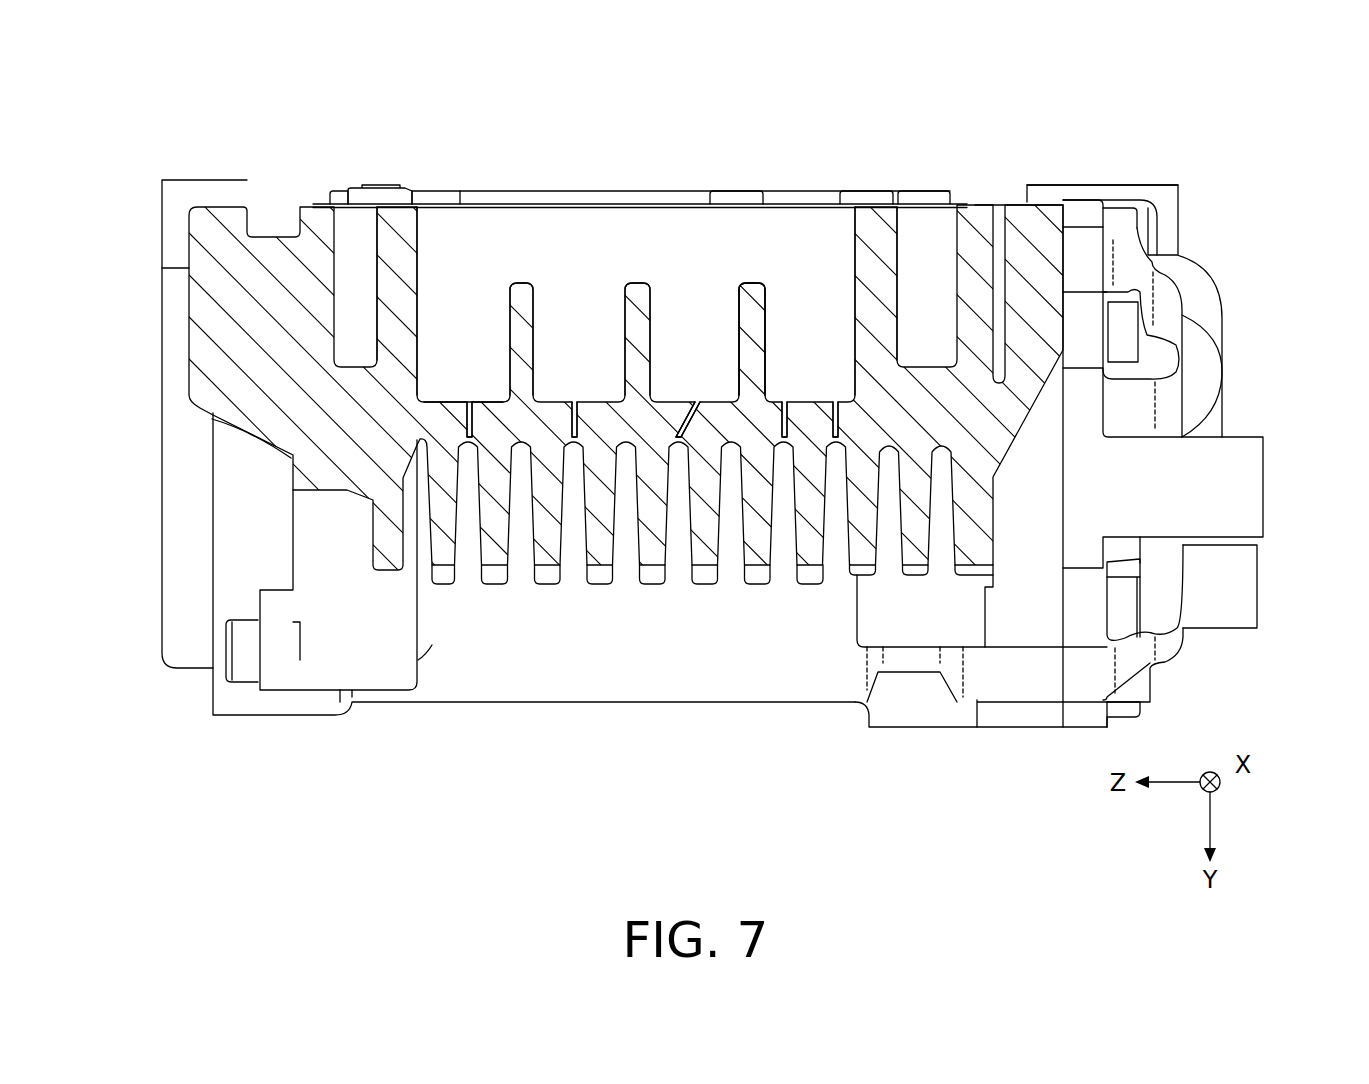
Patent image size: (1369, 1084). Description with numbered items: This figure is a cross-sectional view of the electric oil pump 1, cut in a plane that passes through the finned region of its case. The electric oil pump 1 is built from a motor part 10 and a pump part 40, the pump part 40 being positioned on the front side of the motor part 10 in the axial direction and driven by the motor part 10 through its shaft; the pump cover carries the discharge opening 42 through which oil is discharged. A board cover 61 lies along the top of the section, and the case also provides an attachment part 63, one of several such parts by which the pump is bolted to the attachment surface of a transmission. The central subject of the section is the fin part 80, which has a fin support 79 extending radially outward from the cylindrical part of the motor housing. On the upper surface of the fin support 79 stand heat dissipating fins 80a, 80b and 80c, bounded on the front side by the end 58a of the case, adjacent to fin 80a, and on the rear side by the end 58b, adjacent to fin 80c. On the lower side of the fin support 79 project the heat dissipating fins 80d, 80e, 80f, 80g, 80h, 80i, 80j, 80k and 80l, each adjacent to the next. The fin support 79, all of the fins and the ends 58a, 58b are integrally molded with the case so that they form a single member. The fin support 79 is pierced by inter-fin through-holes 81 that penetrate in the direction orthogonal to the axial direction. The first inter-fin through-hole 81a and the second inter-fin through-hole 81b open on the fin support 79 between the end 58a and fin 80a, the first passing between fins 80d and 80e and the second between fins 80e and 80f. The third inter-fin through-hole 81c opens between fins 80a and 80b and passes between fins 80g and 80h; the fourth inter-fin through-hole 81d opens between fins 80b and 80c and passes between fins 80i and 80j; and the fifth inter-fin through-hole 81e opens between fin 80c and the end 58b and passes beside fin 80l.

The electric oil pump 1 is at (1199, 162).
The motor part 10 is at (152, 602).
The pump part 40 is at (1232, 410).
The discharge opening 42 is at (1262, 562).
The end 58a is at (880, 247).
The end 58b is at (395, 237).
The board cover 61 is at (669, 203).
The attachment part 63 is at (1170, 212).
The fin support 79 is at (497, 410).
The fin part 80 is at (757, 327).
The heat dissipating fin 80a is at (750, 292).
The heat dissipating fin 80b is at (637, 292).
The heat dissipating fin 80c is at (518, 297).
The heat dissipating fin 80d is at (860, 558).
The heat dissipating fin 80e is at (808, 584).
The heat dissipating fin 80f is at (758, 584).
The heat dissipating fin 80g is at (707, 582).
The heat dissipating fin 80h is at (653, 584).
The heat dissipating fin 80i is at (602, 584).
The heat dissipating fin 80j is at (548, 584).
The heat dissipating fin 80k is at (495, 584).
The heat dissipating fin 80l is at (443, 584).
The inter-fin through-hole 81 is at (691, 447).
The first inter-fin through-hole 81a is at (838, 402).
The second inter-fin through-hole 81b is at (785, 402).
The third inter-fin through-hole 81c is at (683, 410).
The fourth inter-fin through-hole 81d is at (575, 405).
The fifth inter-fin through-hole 81e is at (457, 405).